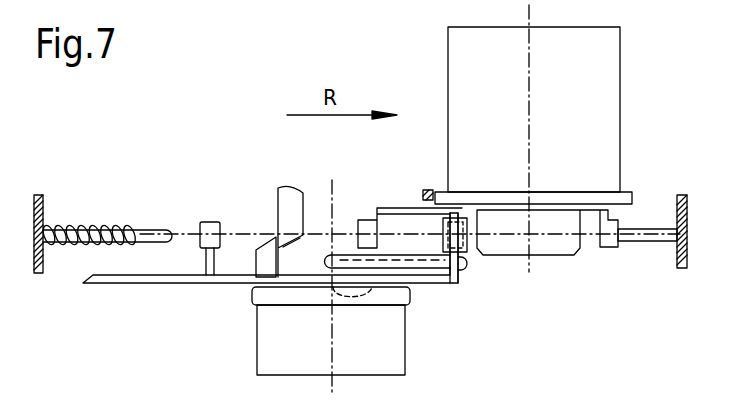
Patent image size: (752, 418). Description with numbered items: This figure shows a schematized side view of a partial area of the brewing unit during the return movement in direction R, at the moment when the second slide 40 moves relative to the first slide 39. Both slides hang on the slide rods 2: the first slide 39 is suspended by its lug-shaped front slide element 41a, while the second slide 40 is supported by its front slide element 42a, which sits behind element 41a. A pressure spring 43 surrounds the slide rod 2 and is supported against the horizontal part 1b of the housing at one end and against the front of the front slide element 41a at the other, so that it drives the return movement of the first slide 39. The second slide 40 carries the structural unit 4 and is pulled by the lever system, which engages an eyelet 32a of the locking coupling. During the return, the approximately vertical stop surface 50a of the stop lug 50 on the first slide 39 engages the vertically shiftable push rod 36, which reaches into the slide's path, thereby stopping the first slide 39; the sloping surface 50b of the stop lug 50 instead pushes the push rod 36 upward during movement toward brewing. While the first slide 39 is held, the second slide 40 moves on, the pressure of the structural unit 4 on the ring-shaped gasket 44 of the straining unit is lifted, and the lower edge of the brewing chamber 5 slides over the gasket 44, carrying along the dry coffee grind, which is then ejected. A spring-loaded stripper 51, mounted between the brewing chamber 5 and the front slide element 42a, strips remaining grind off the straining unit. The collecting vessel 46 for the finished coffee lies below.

The horizontal part of the housing 1b is at (41, 196).
The slide rod 2 is at (155, 230).
The pressure spring 43 is at (110, 230).
The front slide element 41a is at (210, 228).
The first slide 39 is at (232, 277).
The stop lug 50 is at (290, 245).
The sloping surface of the stop lug 50b is at (279, 232).
The push rod 36 is at (293, 205).
The stop surface 50a is at (282, 247).
The front slide element of the second slide 42a is at (370, 230).
The ring-shaped gasket 44 is at (413, 285).
The second slide 40 is at (412, 207).
The stripper 51 is at (467, 223).
The brewing chamber 5 is at (560, 240).
The structural unit 4 is at (629, 190).
The eyelet 32a is at (431, 190).
The collecting vessel 46 is at (298, 332).